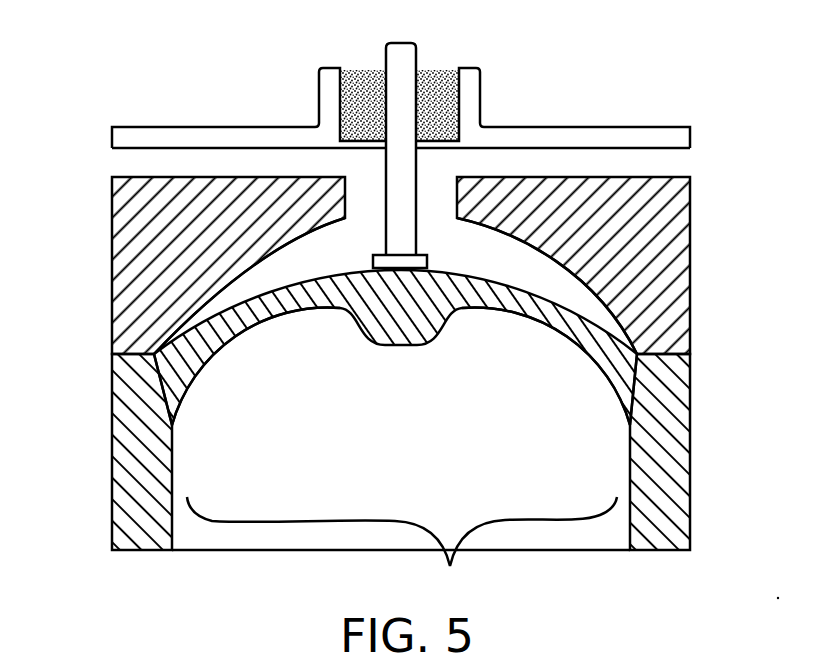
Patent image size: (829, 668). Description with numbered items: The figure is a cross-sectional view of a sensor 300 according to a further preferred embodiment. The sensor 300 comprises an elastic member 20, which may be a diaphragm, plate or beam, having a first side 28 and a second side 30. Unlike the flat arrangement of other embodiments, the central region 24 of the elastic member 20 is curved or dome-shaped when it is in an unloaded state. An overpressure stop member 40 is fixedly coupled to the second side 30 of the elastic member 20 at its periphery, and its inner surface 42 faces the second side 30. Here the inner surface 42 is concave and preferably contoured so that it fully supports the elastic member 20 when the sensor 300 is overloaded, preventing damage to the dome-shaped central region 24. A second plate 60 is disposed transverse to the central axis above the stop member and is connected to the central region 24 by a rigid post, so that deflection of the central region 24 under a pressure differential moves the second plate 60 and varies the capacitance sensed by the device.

The sensor 300 is at (624, 68).
The second plate 60 is at (117, 137).
The overpressure stop member 40 is at (127, 208).
The inner surface 42 is at (503, 237).
The second side 30 is at (540, 297).
The first side 28 is at (248, 333).
The elastic member 20 is at (552, 330).
The central region 24 is at (402, 547).